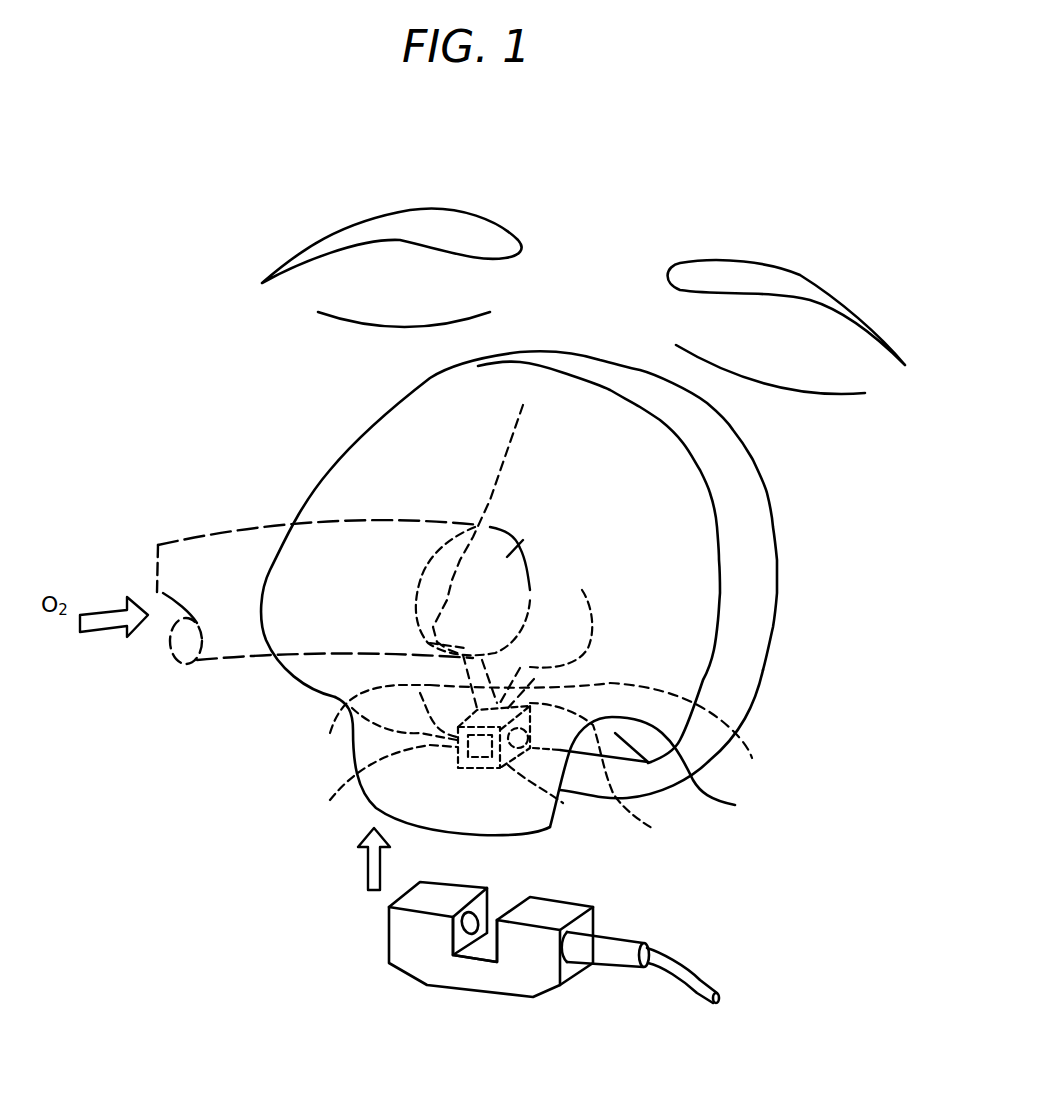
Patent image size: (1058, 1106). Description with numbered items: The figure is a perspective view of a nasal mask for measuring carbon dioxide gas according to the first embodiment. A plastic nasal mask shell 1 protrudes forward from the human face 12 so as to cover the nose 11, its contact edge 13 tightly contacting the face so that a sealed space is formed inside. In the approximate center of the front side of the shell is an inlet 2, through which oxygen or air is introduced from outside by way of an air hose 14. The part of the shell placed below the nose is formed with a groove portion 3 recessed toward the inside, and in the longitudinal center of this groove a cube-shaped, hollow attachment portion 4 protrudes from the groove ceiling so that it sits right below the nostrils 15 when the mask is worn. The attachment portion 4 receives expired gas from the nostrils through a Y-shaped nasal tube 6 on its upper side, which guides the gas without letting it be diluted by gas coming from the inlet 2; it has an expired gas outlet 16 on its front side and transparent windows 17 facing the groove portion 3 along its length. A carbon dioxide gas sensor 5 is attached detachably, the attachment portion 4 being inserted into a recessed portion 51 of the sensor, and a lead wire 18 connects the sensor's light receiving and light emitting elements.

The nasal mask shell 1 is at (687, 547).
The inlet 2 is at (523, 535).
The groove portion 3 is at (652, 772).
The attachment portion 4 is at (332, 800).
The carbon dioxide gas sensor 5 is at (407, 947).
The Y-shaped nasal tube 6 is at (332, 733).
The nose 11 is at (503, 513).
The human face 12 is at (805, 487).
The contact edge 13 is at (770, 655).
The air hose 14 is at (223, 550).
The nostrils 15 is at (608, 733).
The expired gas outlet 16 is at (553, 827).
The transparent windows 17 is at (573, 787).
The lead wire 18 is at (668, 965).
The recessed portion 51 is at (500, 909).